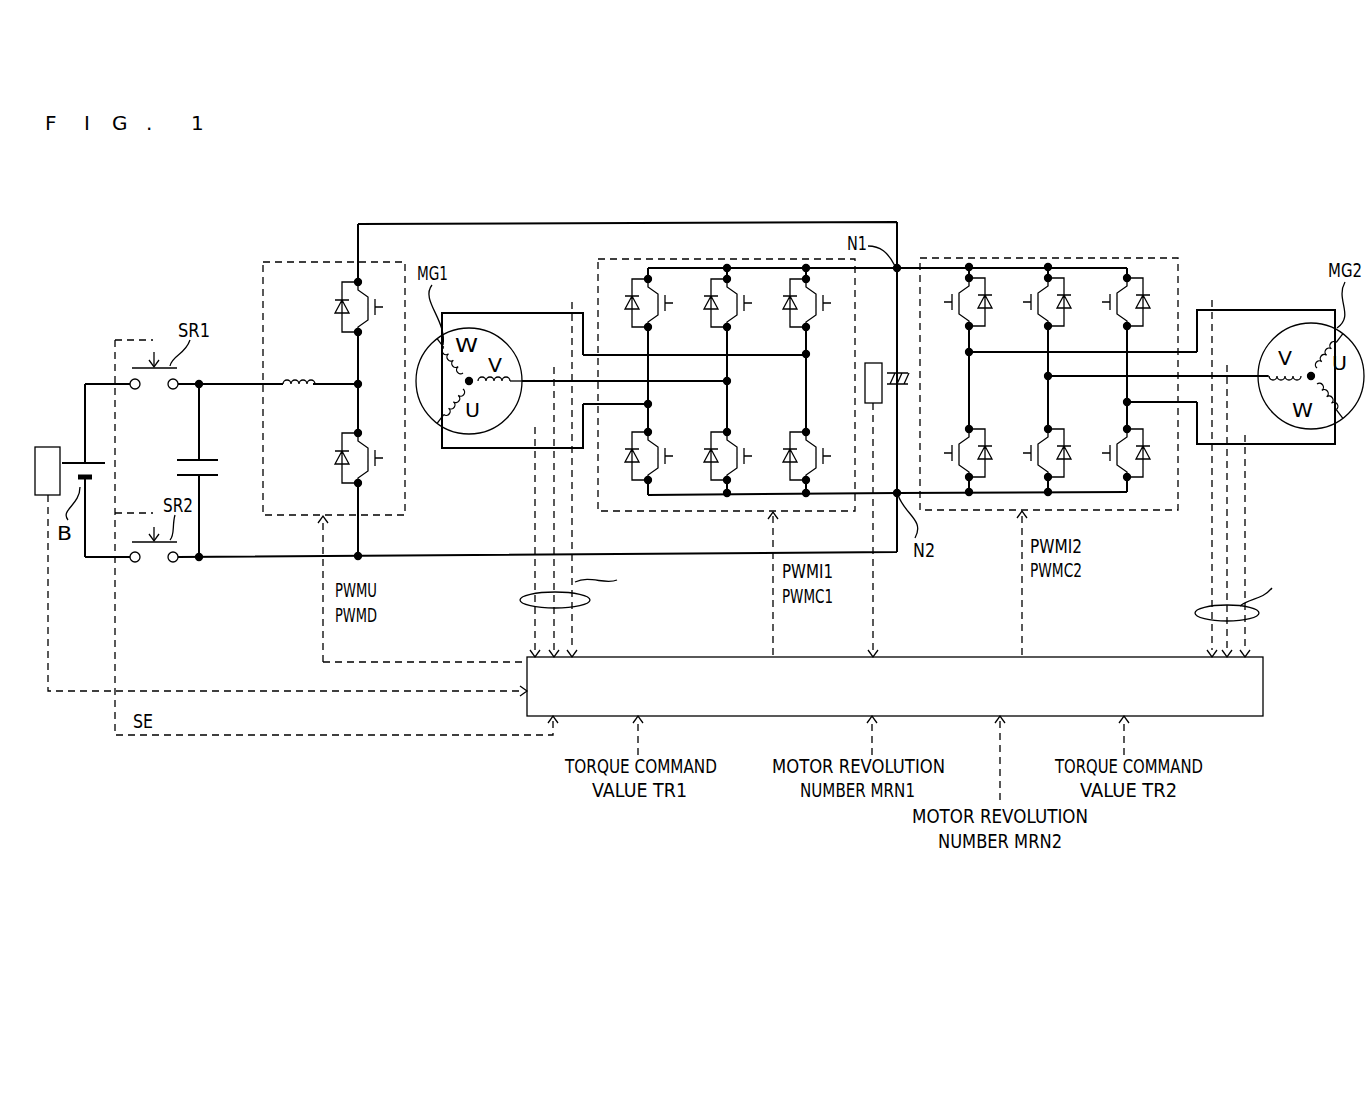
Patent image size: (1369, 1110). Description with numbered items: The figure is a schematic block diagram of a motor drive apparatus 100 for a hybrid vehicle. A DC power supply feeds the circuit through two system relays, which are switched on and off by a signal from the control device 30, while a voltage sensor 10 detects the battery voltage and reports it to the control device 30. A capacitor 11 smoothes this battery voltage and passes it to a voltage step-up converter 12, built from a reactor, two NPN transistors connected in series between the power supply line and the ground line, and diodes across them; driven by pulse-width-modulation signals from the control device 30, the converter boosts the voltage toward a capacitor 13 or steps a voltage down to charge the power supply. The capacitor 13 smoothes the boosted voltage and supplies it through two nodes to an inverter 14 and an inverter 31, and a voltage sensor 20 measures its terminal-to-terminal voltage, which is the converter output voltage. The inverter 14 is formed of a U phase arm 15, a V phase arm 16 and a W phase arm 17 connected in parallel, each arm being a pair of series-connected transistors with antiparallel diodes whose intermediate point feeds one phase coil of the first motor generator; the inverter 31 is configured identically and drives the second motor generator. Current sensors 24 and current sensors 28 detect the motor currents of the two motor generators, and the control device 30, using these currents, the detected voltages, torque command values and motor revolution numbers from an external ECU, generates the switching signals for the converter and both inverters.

The motor drive apparatus 100 is at (798, 181).
The voltage sensor 10 is at (47, 445).
The capacitor 11 is at (188, 460).
The voltage step-up converter 12 is at (300, 262).
The capacitor 13 is at (905, 372).
The inverter 14 is at (685, 259).
The U phase arm 15 is at (678, 412).
The V phase arm 16 is at (758, 389).
The W phase arm 17 is at (840, 371).
The voltage sensor 20 is at (873, 362).
The current sensors 24 is at (570, 318).
The current sensors 28 is at (1212, 310).
The control device 30 is at (1263, 675).
The inverter 31 is at (1068, 258).